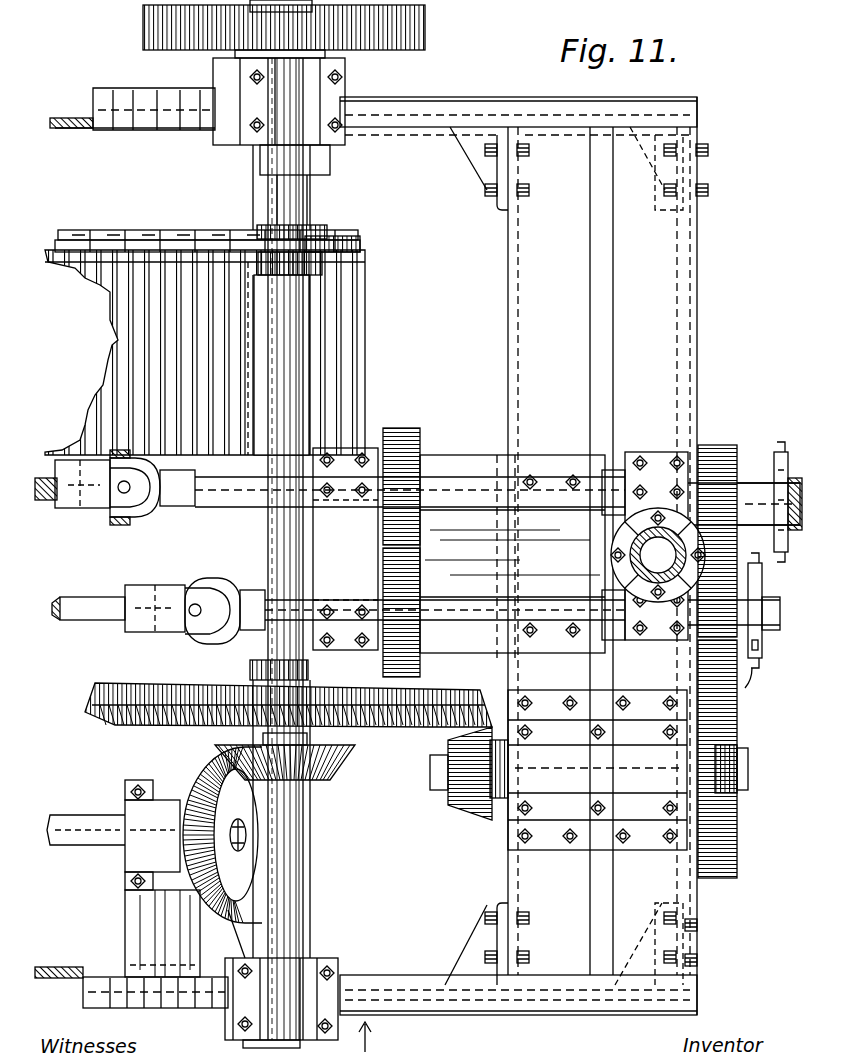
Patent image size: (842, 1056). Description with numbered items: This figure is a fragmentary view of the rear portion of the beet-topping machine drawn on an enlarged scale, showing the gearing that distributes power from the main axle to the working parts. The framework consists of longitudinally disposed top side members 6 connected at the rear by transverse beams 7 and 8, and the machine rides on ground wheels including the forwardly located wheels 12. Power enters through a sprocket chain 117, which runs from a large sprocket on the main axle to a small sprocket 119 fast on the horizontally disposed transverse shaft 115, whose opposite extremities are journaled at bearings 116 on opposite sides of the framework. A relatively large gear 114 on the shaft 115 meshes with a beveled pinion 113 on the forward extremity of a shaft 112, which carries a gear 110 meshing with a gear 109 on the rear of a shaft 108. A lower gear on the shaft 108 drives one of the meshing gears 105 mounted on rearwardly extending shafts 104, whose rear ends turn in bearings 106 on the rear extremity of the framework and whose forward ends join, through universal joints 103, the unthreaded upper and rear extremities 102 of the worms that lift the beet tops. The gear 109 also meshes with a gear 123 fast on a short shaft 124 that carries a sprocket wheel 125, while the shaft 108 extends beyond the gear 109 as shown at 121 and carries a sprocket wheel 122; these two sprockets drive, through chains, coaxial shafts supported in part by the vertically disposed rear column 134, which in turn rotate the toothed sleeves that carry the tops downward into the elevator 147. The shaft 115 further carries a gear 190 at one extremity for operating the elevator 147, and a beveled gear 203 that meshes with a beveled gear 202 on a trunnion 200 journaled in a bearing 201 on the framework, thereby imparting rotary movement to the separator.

The top side member 6 is at (142, 130).
The transverse beam 7 is at (661, 556).
The transverse beam 8 is at (529, 556).
The forwardly located wheel 12 is at (378, 1038).
The upper and rear extremity of worm 102 is at (45, 507).
The universal joint 103 is at (140, 527).
The rearwardly extending shaft 104 is at (231, 507).
The meshing gear 105 is at (413, 460).
The bearing 106 is at (660, 458).
The shaft 108 is at (780, 626).
The gear 109 is at (752, 612).
The gear 110 is at (740, 830).
The shaft 112 is at (748, 768).
The beveled pinion 113 is at (465, 812).
The large gear 114 is at (430, 735).
The transverse shaft 115 is at (310, 203).
The bearing 116 is at (333, 150).
The sprocket chain 117 is at (140, 233).
The small sprocket 119 is at (356, 242).
The shaft extension 121 is at (748, 655).
The sprocket wheel 122 is at (762, 646).
The gear 123 is at (723, 445).
The short shaft 124 is at (748, 480).
The sprocket wheel 125 is at (783, 460).
The rear column 134 is at (640, 548).
The elevator 147 is at (118, 322).
The gear 190 is at (425, 38).
The trunnion 200 is at (68, 823).
The bearing 201 is at (148, 810).
The beveled gear 202 is at (200, 903).
The beveled gear 203 is at (346, 763).